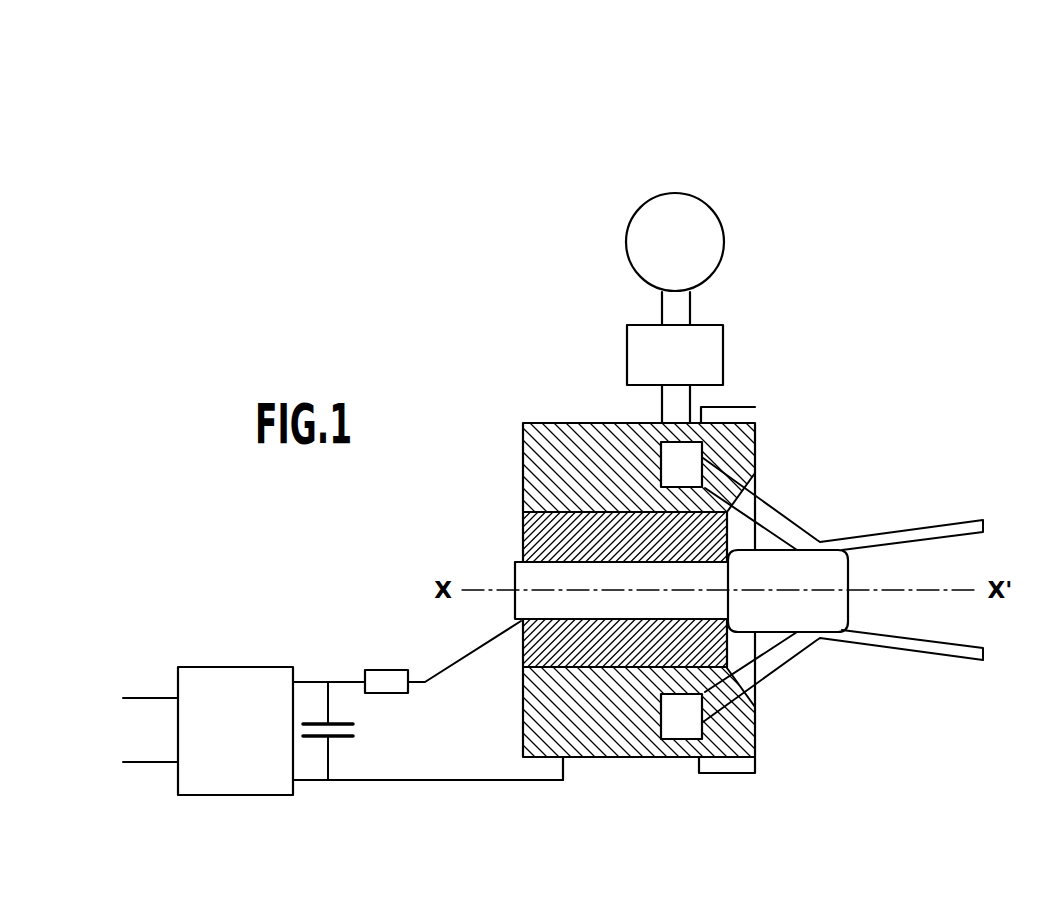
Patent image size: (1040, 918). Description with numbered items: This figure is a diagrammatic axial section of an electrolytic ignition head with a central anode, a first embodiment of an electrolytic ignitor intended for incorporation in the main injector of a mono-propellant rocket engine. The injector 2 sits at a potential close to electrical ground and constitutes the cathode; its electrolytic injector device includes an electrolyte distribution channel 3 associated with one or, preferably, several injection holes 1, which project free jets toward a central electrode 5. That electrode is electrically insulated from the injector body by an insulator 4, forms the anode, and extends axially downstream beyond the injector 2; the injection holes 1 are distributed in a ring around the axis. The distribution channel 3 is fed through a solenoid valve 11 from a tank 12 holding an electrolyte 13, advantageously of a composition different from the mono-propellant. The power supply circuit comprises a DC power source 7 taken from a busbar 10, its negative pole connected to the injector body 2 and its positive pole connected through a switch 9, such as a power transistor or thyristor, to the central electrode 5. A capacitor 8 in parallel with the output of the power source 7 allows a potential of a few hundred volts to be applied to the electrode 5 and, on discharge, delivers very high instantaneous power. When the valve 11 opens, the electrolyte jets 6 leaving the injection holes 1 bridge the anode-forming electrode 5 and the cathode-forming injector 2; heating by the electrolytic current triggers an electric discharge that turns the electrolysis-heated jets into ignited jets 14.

The injection hole 1 is at (758, 507).
The injector 2 is at (558, 448).
The electrolyte distribution channel 3 is at (695, 450).
The insulator 4 is at (523, 554).
The central electrode 5 is at (500, 609).
The electrolyte jets 6 is at (770, 665).
The DC power source 7 is at (223, 685).
The capacitor 8 is at (318, 723).
The switch 9 is at (383, 678).
The busbar 10 is at (138, 697).
The solenoid valve 11 is at (647, 347).
The tank 12 is at (628, 230).
The electrolyte 13 is at (696, 245).
The ignited jets 14 is at (888, 645).